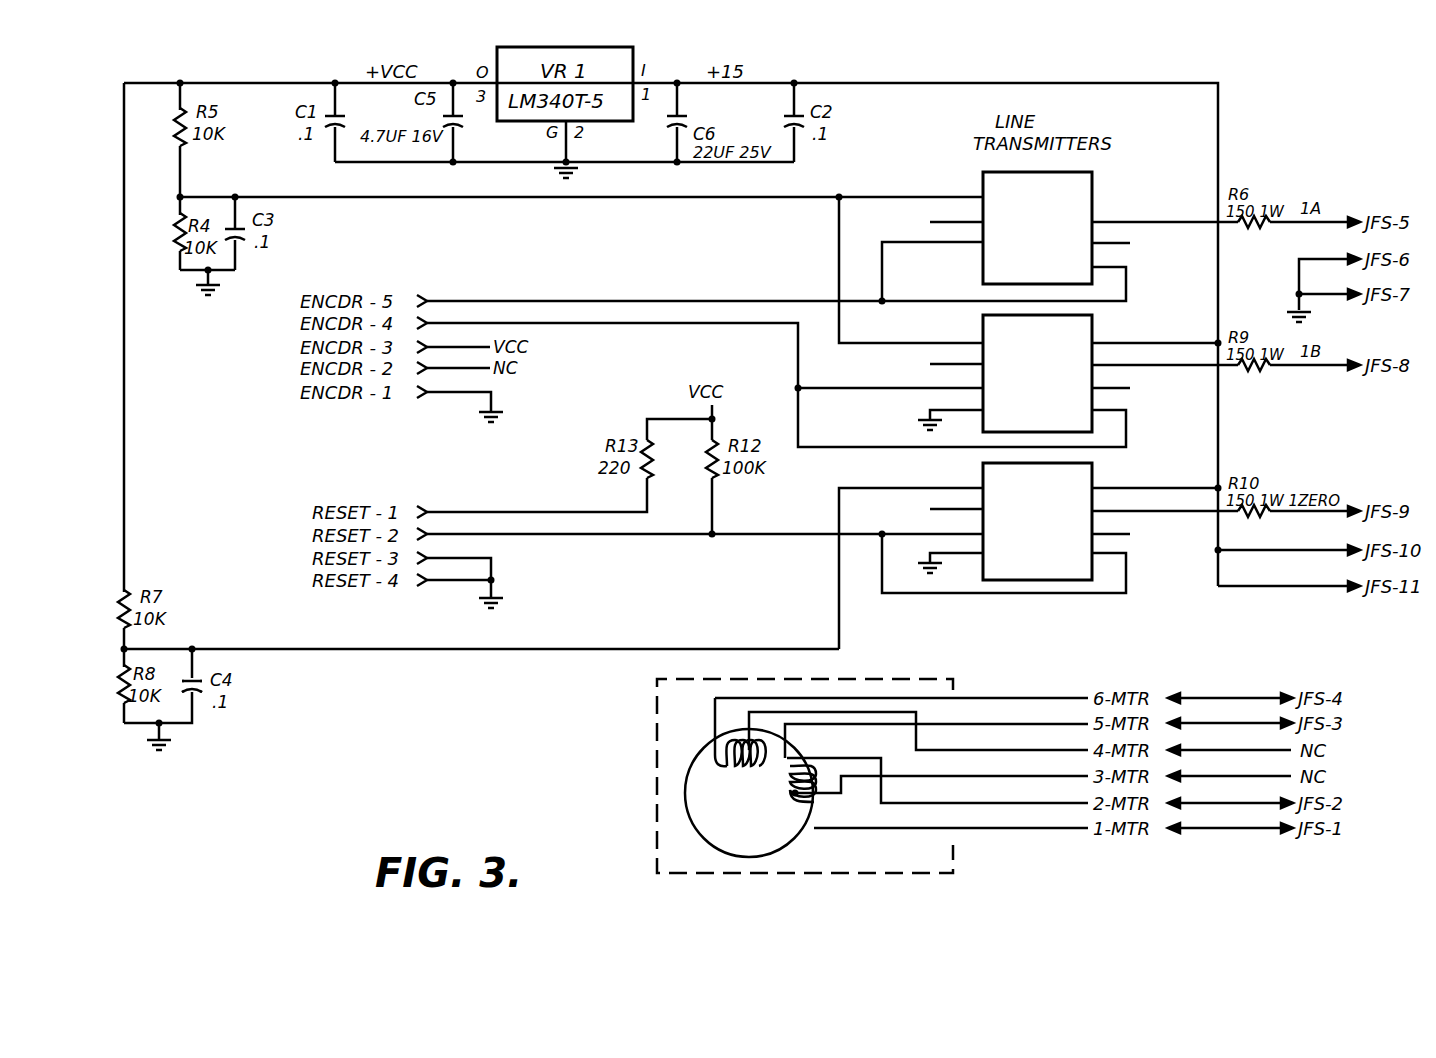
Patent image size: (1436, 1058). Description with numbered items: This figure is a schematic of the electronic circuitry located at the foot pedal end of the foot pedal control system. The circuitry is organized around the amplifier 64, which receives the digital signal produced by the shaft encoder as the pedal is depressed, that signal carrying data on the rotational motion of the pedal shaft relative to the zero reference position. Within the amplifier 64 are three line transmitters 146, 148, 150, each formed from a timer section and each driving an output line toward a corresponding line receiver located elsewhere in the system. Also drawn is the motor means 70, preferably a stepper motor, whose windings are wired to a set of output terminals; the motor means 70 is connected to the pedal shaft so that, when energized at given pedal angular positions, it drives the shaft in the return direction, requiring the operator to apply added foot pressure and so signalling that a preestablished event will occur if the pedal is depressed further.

The amplifier 64 is at (1205, 75).
The line transmitter 146 is at (1092, 178).
The line transmitter 148 is at (1092, 322).
The line transmitter 150 is at (1092, 468).
The motor means 70 is at (640, 796).